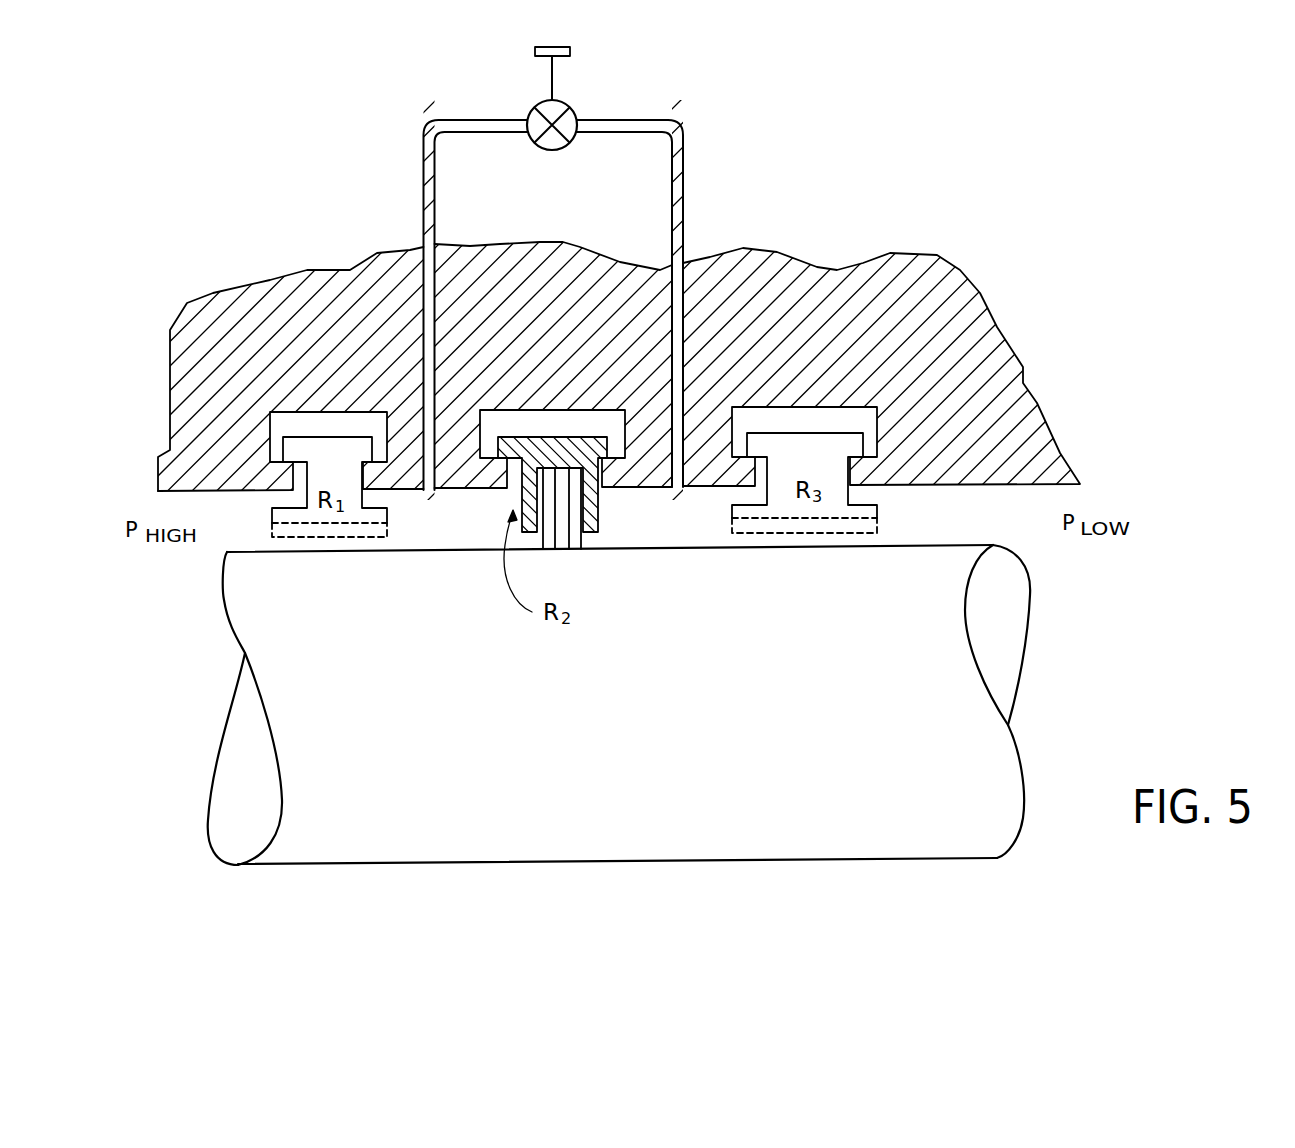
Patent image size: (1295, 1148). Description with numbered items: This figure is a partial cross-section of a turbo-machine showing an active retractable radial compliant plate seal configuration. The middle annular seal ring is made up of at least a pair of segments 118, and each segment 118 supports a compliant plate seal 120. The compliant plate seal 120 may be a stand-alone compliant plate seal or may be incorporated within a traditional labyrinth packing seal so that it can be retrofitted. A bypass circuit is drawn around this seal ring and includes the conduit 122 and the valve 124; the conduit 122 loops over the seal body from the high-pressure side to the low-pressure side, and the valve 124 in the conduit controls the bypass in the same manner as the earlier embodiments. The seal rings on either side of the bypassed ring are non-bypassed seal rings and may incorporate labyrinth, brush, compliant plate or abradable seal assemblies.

The segment 118 is at (552, 440).
The compliant plate seal 120 is at (575, 542).
The conduit 122 is at (425, 188).
The valve 124 is at (553, 146).